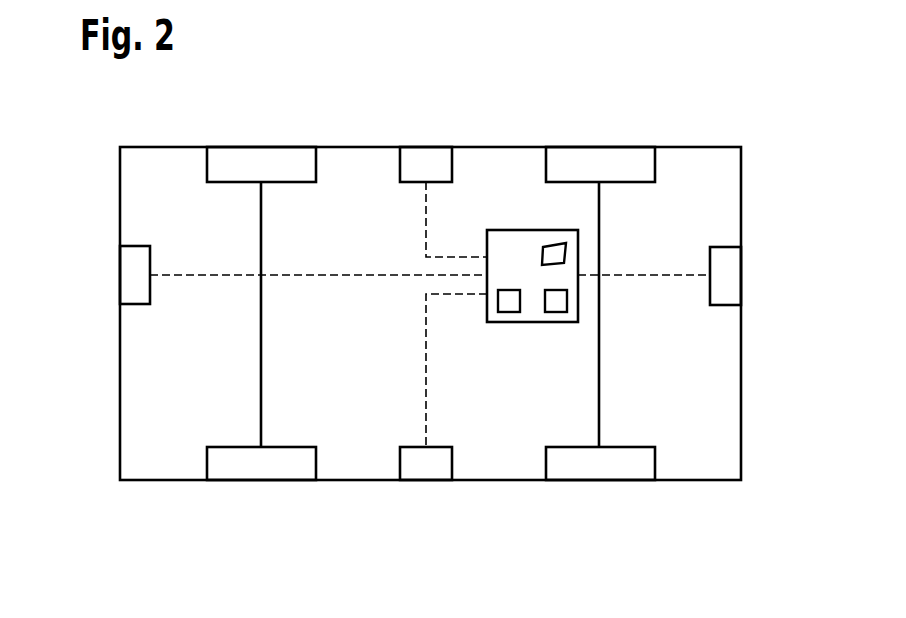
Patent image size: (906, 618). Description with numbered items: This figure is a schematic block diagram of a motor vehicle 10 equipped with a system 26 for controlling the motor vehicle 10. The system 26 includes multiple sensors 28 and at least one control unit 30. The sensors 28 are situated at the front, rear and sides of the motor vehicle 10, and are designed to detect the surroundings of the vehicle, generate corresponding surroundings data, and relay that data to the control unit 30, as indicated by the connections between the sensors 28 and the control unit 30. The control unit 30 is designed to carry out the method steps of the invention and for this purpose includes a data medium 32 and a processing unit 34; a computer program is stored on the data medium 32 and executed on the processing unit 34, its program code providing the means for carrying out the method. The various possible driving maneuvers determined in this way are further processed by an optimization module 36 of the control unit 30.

The motor vehicle 10 is at (677, 148).
The system for controlling the motor vehicle 26 is at (531, 318).
The sensors 28 is at (424, 163).
The control unit 30 is at (531, 230).
The data medium 32 is at (509, 302).
The processing unit 34 is at (553, 302).
The optimization module 36 is at (557, 243).